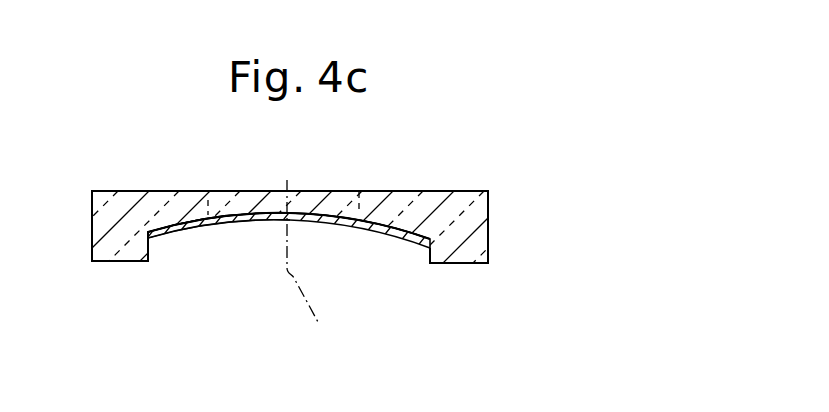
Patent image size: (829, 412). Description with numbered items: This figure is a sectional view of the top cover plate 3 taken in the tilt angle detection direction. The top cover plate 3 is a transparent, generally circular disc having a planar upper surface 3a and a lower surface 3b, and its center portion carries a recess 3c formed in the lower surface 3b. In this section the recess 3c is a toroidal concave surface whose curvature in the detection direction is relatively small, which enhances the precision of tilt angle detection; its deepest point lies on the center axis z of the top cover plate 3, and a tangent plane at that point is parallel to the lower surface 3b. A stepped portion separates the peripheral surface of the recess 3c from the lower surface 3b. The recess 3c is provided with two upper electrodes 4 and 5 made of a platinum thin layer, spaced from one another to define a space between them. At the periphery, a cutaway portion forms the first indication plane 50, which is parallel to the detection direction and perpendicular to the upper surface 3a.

The top cover plate 3 is at (488, 223).
The upper surface 3a is at (170, 191).
The lower surface 3b is at (122, 262).
The recess 3c is at (273, 222).
The first upper electrode 4 is at (365, 229).
The second upper electrode 5 is at (196, 230).
The first indication plane 50 is at (354, 191).
The center axis z is at (307, 267).